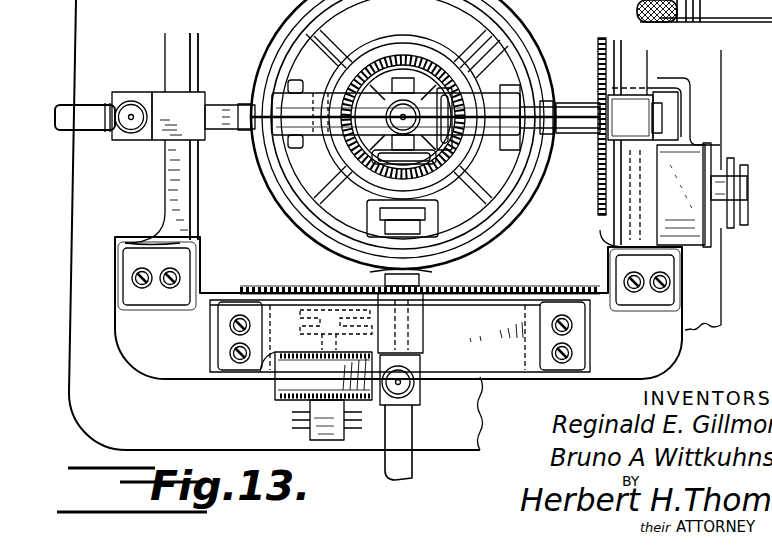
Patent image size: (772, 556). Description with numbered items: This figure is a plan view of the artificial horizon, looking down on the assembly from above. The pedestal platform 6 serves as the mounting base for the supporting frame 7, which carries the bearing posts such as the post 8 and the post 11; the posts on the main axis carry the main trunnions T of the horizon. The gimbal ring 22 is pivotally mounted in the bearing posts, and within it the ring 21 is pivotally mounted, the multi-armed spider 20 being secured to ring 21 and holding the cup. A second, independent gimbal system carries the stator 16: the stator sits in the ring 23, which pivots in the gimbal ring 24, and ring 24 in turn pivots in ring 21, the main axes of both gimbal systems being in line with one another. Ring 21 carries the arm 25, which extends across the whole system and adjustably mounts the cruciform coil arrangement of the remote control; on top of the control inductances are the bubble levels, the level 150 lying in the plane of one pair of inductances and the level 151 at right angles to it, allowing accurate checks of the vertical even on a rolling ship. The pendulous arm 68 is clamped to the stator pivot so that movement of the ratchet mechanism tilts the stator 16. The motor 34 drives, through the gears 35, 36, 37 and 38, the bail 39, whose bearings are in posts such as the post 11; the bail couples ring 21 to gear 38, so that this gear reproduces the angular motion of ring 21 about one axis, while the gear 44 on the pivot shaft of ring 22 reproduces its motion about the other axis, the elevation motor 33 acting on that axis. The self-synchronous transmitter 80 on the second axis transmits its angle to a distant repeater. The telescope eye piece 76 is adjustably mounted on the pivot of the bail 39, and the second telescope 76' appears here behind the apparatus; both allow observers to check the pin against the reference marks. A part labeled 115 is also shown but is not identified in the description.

The platform 6 is at (628, 256).
The supporting frame 7 is at (395, 225).
The bearing post 8 is at (401, 336).
The bearing post 11 is at (170, 202).
The stator 16 is at (418, 56).
The multi-armed spider 20 is at (472, 152).
The ring 21 is at (300, 195).
The gimbal ring 22 is at (493, 238).
The ring 23 is at (372, 60).
The gimbal ring 24 is at (324, 83).
The arm 25 is at (425, 114).
The A. C. motor 33 is at (316, 375).
The motor 34 is at (645, 90).
The gear 35 is at (610, 99).
The gear 36 is at (603, 149).
The gear 37 is at (643, 95).
The gear 38 is at (600, 212).
The bail 39 is at (233, 103).
The gear 44 is at (328, 293).
The arm 68 is at (169, 9).
The telescope 76 is at (155, 99).
The telescope 76' is at (419, 427).
The transmitter 80 is at (685, 153).
The upper member 115 is at (537, 8).
The level 150 is at (508, 61).
The level 151 is at (352, 160).
The main trunnions T is at (412, 288).